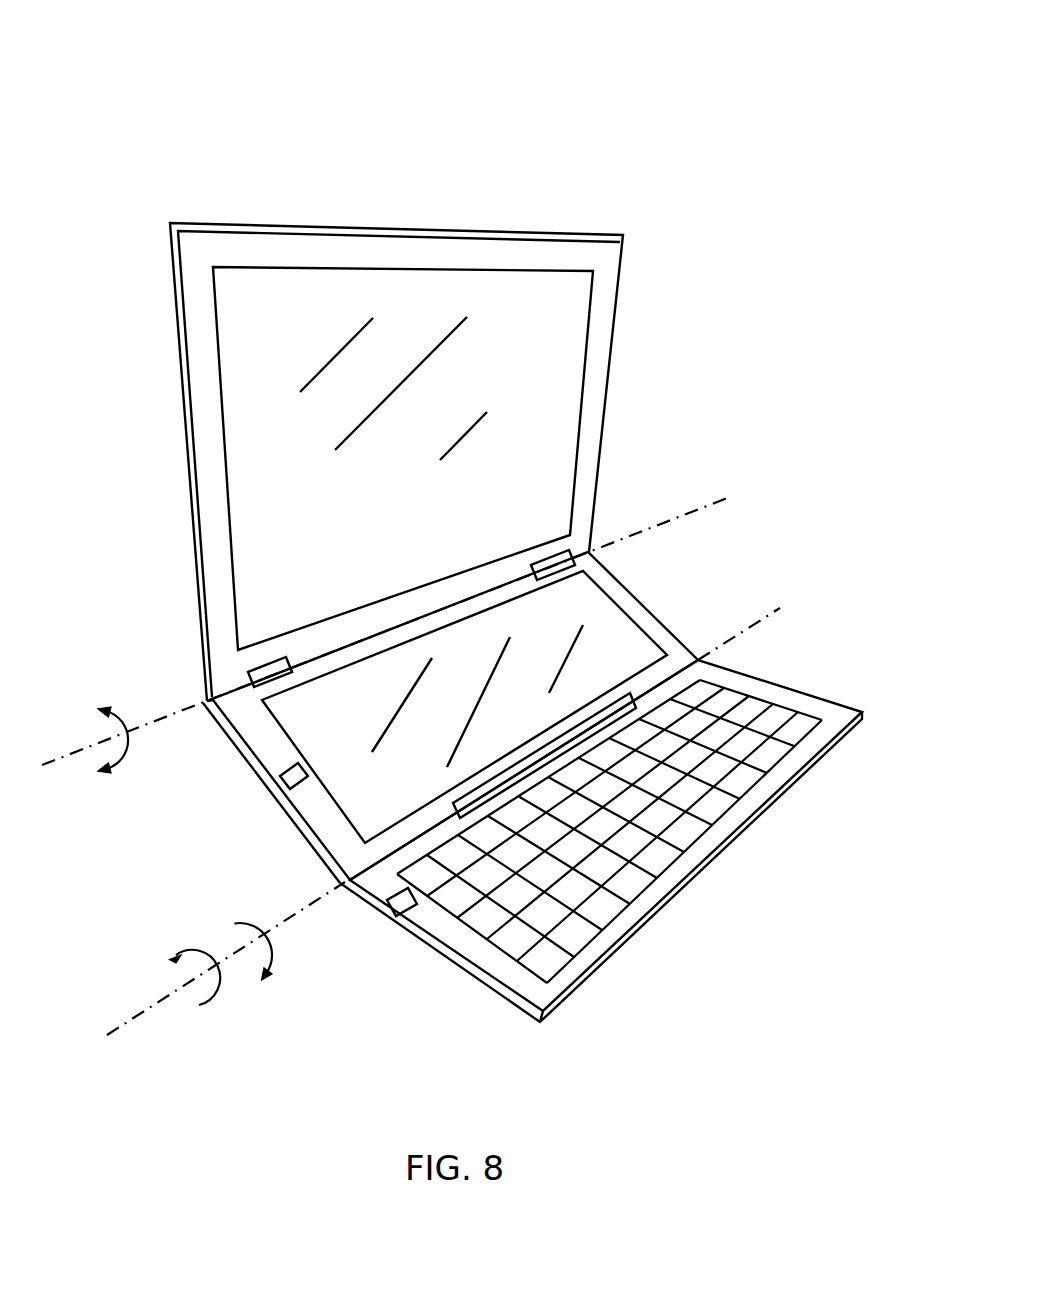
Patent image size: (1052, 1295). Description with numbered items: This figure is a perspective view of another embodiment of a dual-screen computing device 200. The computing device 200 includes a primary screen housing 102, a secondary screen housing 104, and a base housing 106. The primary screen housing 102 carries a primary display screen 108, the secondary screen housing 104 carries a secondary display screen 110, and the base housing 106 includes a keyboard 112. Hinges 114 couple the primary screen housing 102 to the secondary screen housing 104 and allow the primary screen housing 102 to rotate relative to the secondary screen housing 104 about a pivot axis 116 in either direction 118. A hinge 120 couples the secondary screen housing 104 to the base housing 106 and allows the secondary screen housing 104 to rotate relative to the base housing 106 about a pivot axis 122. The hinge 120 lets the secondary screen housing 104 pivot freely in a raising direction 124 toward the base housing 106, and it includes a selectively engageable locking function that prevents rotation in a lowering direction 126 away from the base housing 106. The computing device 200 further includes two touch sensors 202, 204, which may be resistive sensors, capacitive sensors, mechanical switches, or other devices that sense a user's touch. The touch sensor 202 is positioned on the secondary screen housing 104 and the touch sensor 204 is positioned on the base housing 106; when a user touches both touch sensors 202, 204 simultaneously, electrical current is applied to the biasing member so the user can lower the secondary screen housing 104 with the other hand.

The dual-screen computing device 200 is at (893, 90).
The primary screen housing 102 is at (610, 262).
The secondary screen housing 104 is at (620, 594).
The base housing 106 is at (783, 697).
The primary display screen 108 is at (563, 342).
The secondary display screen 110 is at (620, 648).
The keyboard 112 is at (772, 752).
The hinges 114 is at (550, 568).
The pivot axis 116 is at (171, 712).
The direction 118 is at (127, 736).
The hinge 120 is at (540, 764).
The pivot axis 122 is at (335, 890).
The raising direction 124 is at (268, 968).
The lowering direction 126 is at (189, 948).
The touch sensor 202 is at (288, 788).
The touch sensor 204 is at (405, 906).